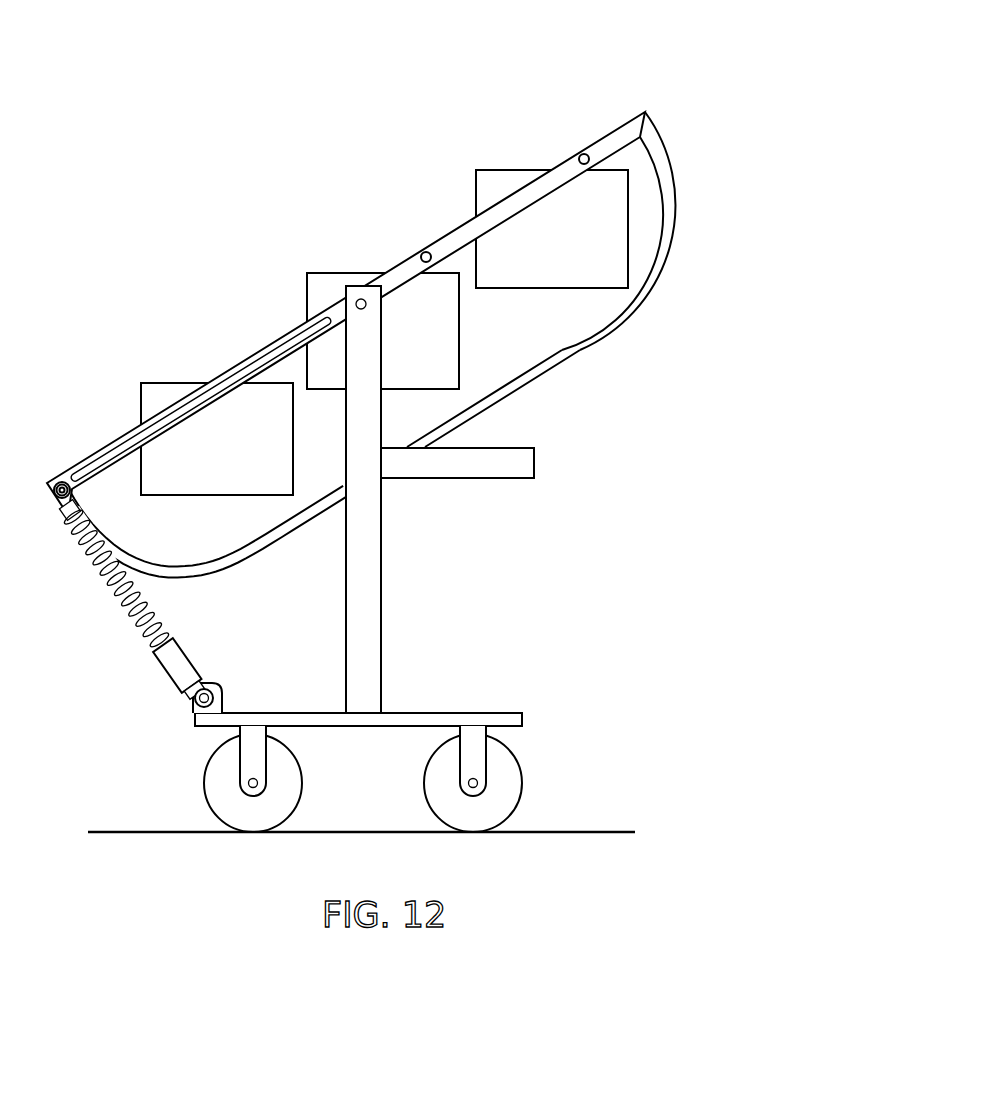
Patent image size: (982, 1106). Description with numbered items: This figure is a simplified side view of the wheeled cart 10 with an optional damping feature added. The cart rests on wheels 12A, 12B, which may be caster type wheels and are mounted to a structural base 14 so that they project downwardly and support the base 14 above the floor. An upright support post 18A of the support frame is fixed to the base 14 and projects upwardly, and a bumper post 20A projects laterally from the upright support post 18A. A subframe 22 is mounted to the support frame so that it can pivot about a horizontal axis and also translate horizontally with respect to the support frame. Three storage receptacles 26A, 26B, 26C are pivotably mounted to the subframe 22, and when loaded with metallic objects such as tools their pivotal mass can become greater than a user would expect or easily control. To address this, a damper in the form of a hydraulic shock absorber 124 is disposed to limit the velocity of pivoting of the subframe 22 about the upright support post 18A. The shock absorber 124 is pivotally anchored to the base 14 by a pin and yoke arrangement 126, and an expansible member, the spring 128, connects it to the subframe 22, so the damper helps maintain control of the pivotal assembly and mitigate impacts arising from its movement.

The wheeled cart 10 is at (166, 212).
The subframe 22 is at (687, 85).
The storage receptacle 26A is at (252, 456).
The storage receptacle 26B is at (443, 346).
The storage receptacle 26C is at (591, 235).
The bumper post 20A is at (502, 469).
The upright support post 18A is at (383, 542).
The structural base 14 is at (412, 712).
The wheel 12A is at (220, 775).
The wheel 12B is at (508, 762).
The pin and yoke arrangement 126 is at (169, 606).
The spring 128 is at (102, 563).
The hydraulic shock absorber 124 is at (177, 667).